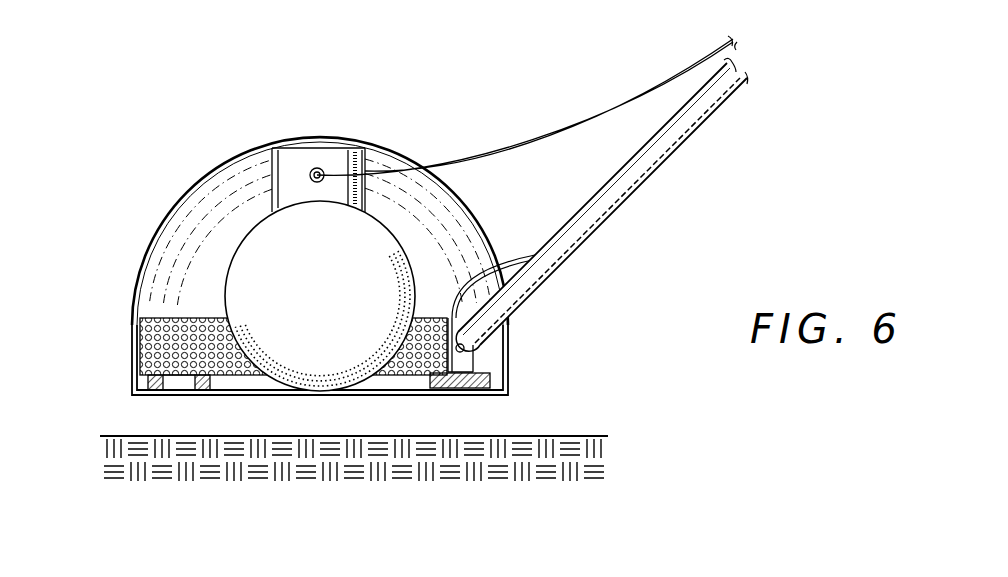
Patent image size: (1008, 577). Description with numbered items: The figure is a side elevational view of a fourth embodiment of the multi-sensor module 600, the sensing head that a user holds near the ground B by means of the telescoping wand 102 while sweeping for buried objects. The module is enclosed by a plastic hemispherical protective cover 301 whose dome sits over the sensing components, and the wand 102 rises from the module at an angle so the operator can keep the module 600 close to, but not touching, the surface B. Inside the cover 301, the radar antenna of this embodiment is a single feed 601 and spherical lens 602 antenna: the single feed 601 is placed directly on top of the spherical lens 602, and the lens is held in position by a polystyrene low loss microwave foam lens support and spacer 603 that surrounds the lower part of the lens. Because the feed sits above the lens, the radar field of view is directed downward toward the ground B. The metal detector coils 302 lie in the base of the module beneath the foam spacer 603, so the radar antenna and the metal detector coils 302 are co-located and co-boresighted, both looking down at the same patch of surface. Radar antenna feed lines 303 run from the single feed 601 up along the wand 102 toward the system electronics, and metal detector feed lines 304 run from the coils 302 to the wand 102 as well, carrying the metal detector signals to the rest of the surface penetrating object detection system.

The multi-sensor module 600 is at (203, 98).
The single feed 601 is at (337, 153).
The spherical lens 602 is at (344, 284).
The polystyrene low loss microwave foam lens support and spacer 603 is at (175, 330).
The plastic hemispherical protective cover 301 is at (185, 193).
The metal detector coils 302 is at (197, 388).
The radar antenna feed lines 303 is at (559, 137).
The metal detector feed lines 304 is at (546, 265).
The telescoping wand 102 is at (656, 163).
The surface B is at (583, 437).